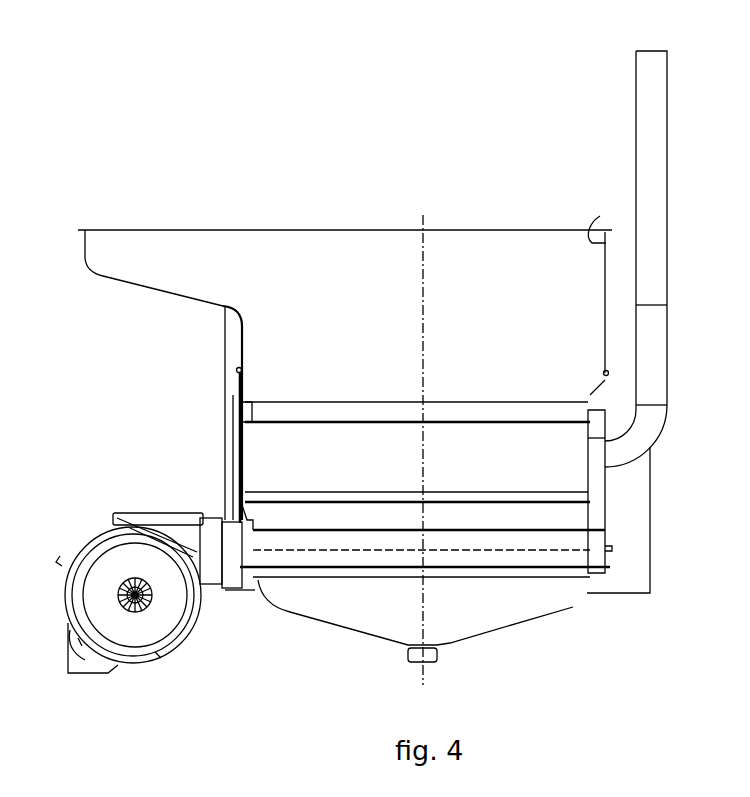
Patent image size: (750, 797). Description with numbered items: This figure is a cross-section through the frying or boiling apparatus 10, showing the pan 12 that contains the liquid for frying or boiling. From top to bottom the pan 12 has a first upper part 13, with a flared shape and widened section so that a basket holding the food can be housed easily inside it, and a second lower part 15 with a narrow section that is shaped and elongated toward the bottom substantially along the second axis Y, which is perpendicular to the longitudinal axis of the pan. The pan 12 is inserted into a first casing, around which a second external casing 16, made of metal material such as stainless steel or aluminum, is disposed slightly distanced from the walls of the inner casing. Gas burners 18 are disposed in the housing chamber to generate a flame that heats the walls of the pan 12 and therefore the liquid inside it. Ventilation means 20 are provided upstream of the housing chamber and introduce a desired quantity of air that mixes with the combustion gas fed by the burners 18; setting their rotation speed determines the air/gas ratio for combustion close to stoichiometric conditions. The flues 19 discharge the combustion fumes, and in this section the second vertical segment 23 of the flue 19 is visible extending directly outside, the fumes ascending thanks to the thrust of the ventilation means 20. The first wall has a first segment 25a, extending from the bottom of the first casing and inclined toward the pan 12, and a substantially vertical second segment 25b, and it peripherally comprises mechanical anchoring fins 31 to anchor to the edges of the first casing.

The apparatus 10 is at (127, 188).
The pan 12 is at (97, 280).
The first upper part 13 is at (606, 219).
The second lower part 15 is at (337, 612).
The second external casing 16 is at (655, 540).
The gas burners 18 is at (548, 543).
The flues 19 is at (668, 93).
The ventilation means 20 is at (58, 549).
The second vertical segment 23 is at (652, 188).
The first segment 25a is at (370, 498).
The second segment 25b is at (270, 460).
The mechanical anchoring fins 31 is at (243, 440).
The second axis Y is at (423, 670).